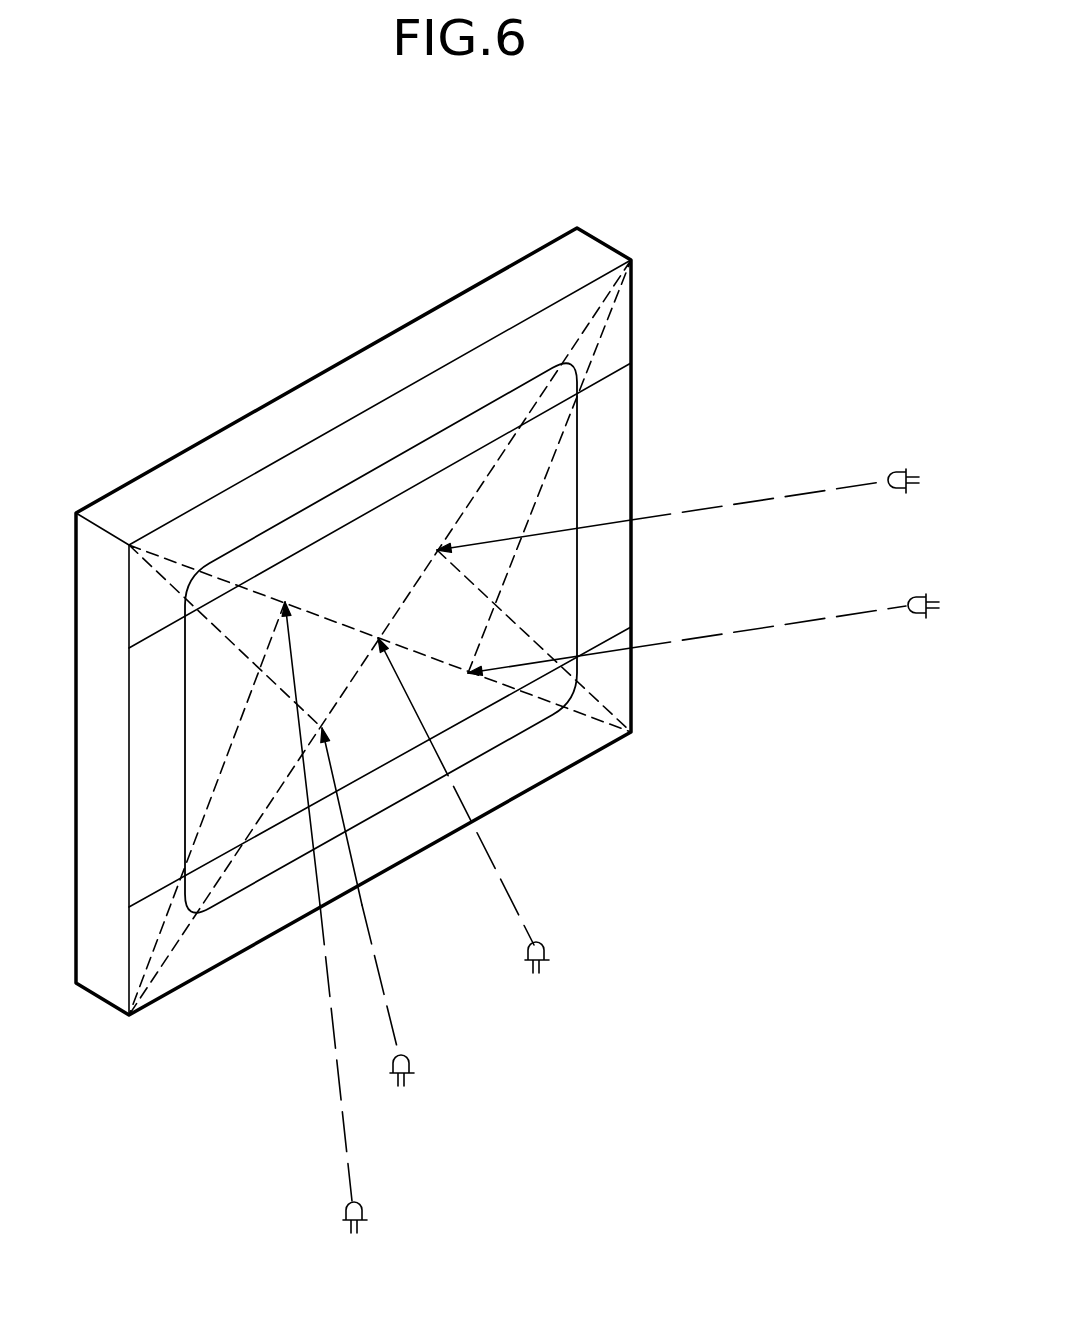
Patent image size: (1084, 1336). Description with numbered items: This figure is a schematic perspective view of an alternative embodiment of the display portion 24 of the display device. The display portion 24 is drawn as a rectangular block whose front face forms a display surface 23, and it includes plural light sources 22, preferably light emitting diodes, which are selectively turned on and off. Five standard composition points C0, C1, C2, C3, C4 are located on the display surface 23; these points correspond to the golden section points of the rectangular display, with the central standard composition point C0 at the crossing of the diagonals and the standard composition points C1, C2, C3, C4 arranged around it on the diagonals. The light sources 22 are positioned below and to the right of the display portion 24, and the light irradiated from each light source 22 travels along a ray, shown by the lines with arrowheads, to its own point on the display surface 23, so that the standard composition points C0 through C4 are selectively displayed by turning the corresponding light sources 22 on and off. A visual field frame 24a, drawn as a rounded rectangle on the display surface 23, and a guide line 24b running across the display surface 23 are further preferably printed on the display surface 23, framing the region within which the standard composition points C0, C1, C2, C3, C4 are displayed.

The light sources 22 is at (641, 799).
The display surface 23 is at (602, 445).
The display portion 24 is at (737, 233).
The visual field frame 24a is at (577, 583).
The guide line 24b is at (605, 380).
The standard composition point C0 is at (446, 772).
The standard composition point C1 is at (314, 885).
The standard composition point C2 is at (360, 891).
The standard composition point C3 is at (643, 517).
The standard composition point C4 is at (674, 654).